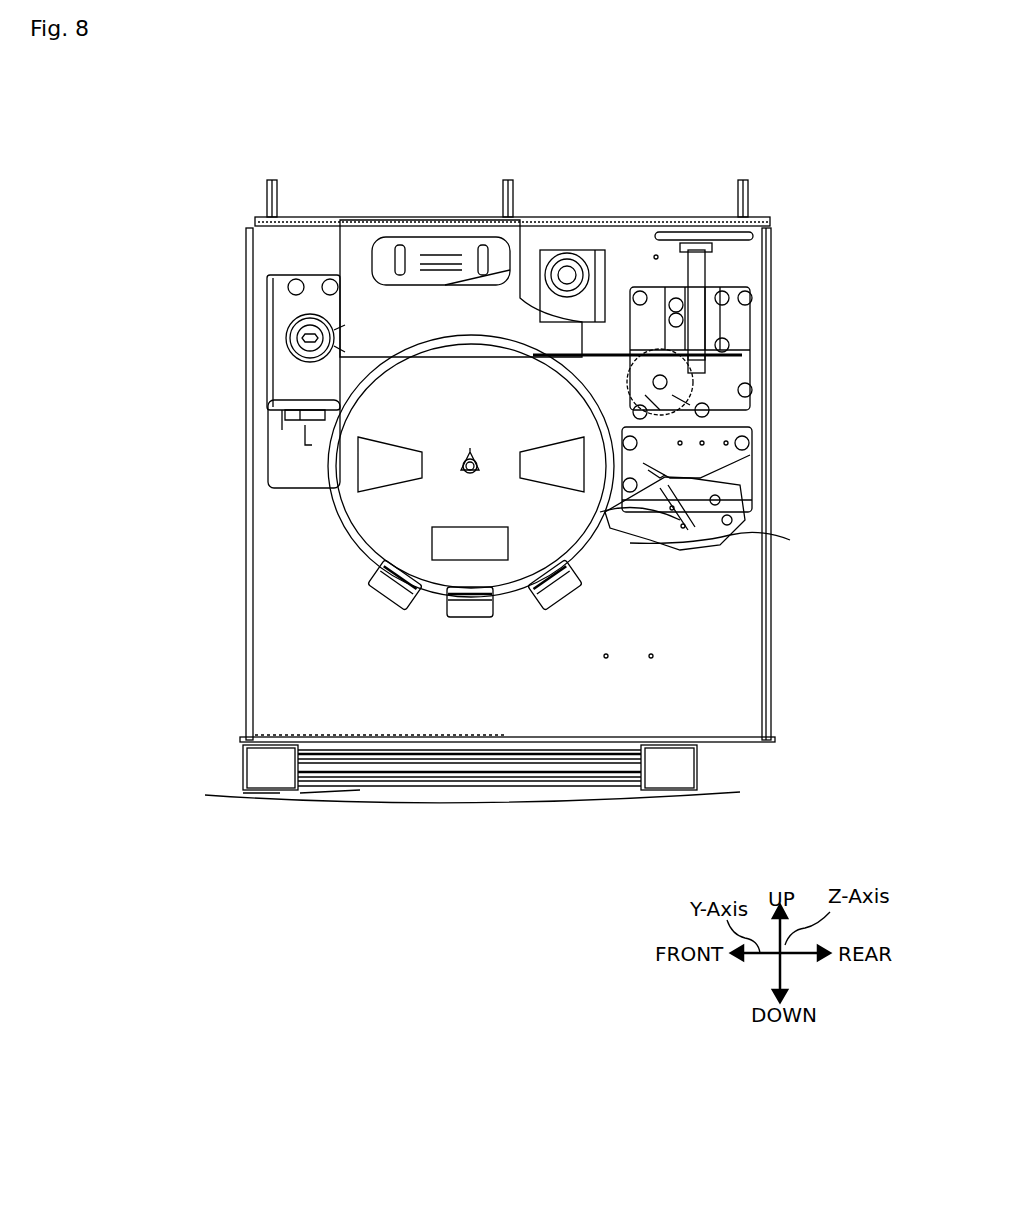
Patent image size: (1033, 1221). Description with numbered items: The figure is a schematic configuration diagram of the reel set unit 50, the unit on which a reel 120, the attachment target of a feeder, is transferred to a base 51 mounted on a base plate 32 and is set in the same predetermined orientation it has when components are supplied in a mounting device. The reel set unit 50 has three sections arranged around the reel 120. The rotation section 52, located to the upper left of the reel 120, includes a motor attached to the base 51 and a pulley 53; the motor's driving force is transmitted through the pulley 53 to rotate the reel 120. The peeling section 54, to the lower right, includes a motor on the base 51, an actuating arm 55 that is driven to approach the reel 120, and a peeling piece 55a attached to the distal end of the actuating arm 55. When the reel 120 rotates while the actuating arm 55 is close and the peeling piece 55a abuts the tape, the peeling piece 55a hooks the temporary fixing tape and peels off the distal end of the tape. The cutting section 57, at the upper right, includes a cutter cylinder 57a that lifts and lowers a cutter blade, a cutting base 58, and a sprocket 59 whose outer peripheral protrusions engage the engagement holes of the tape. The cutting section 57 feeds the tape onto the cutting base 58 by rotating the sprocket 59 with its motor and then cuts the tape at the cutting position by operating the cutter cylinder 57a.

The base plate 32 is at (700, 770).
The reel set unit 50 is at (790, 118).
The base 51 is at (780, 700).
The rotation section 52 is at (196, 352).
The pulley 53 is at (317, 360).
The peeling section 54 is at (880, 566).
The actuating arm 55 is at (630, 543).
The peeling piece 55a is at (645, 463).
The cutting section 57 is at (720, 282).
The cutter cylinder 57a is at (720, 300).
The cutting base 58 is at (680, 362).
The sprocket 59 is at (672, 385).
The reel 120 is at (377, 517).